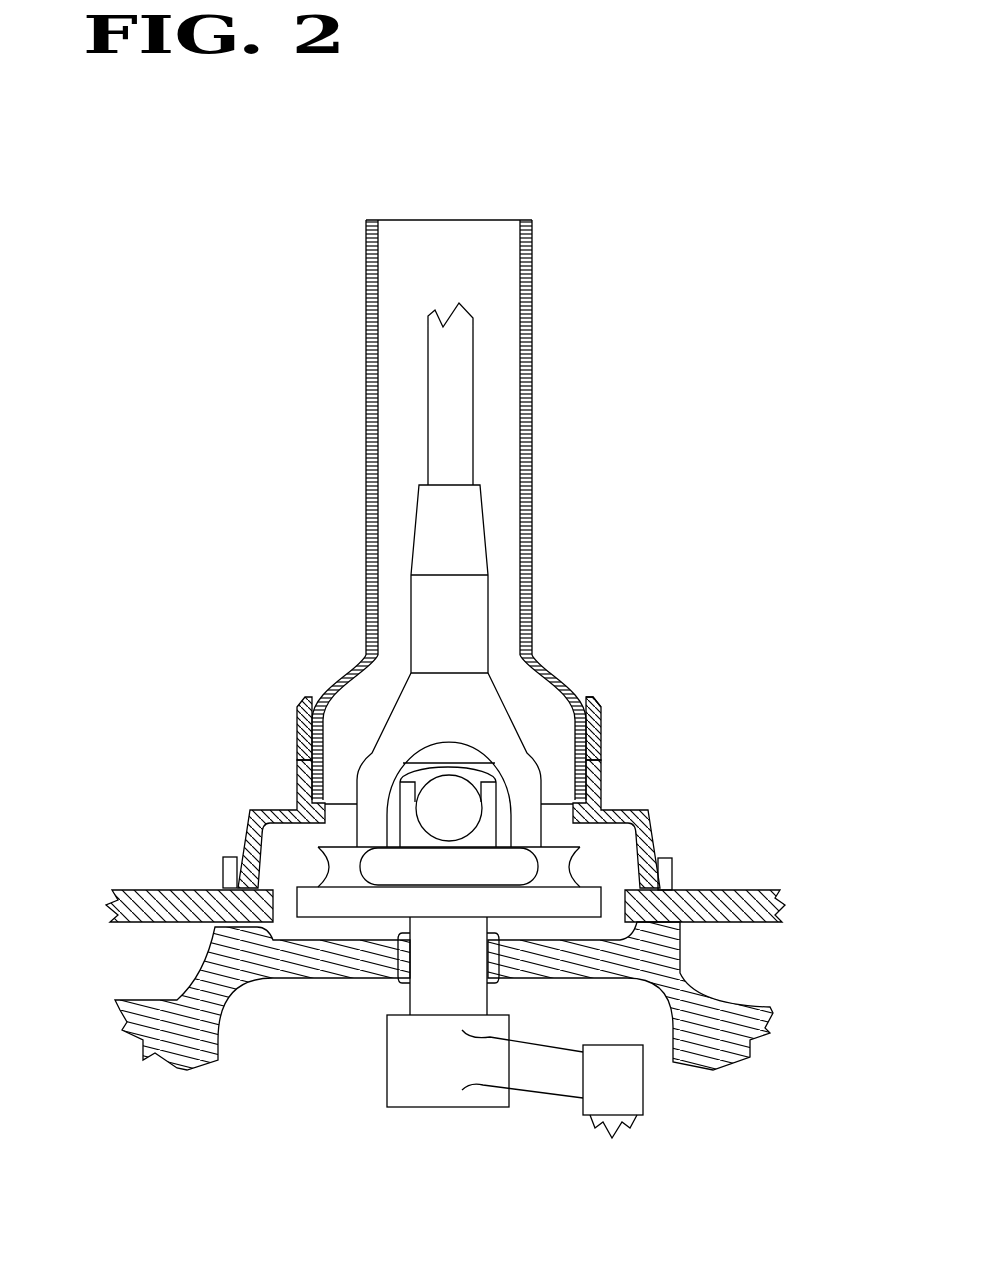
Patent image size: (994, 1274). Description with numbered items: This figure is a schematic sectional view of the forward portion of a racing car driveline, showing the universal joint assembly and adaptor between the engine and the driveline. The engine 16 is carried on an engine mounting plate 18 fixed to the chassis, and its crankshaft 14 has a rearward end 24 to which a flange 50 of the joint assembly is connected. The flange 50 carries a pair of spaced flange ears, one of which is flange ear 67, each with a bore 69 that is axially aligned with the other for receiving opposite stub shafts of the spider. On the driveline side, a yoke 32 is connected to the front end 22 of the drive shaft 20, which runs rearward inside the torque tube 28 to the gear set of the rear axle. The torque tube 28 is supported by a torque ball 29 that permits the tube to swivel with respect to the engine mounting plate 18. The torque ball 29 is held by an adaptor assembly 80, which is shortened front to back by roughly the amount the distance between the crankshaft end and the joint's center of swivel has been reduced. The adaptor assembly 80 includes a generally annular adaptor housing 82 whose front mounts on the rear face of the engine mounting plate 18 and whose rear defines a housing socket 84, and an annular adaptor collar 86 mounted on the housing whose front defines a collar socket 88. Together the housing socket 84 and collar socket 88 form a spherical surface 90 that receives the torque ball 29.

The crankshaft 14 is at (417, 1043).
The engine 16 is at (673, 975).
The engine mounting plate 18 is at (703, 897).
The drive shaft 20 is at (458, 393).
The front end 22 is at (458, 477).
The rearward end 24 is at (390, 907).
The torque tube 28 is at (533, 550).
The torque ball 29 is at (547, 670).
The yoke 32 is at (397, 738).
The flange 50 is at (557, 860).
The flange ear 67 is at (482, 837).
The bore 69 is at (413, 806).
The adaptor assembly 80 is at (440, 746).
The adaptor housing 82 is at (260, 822).
The housing socket 84 is at (588, 767).
The adaptor collar 86 is at (590, 722).
The collar socket 88 is at (308, 698).
The spherical surface 90 is at (577, 695).